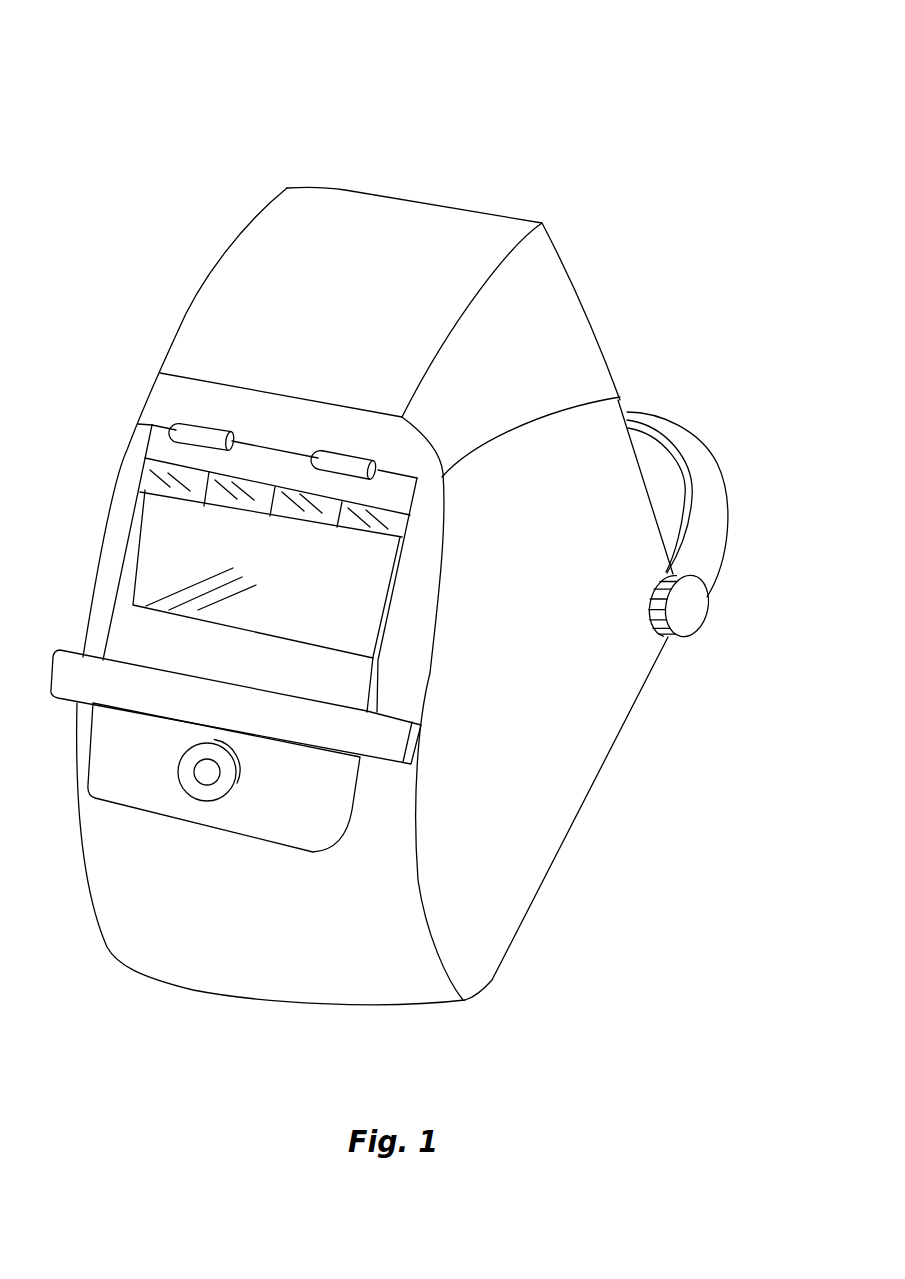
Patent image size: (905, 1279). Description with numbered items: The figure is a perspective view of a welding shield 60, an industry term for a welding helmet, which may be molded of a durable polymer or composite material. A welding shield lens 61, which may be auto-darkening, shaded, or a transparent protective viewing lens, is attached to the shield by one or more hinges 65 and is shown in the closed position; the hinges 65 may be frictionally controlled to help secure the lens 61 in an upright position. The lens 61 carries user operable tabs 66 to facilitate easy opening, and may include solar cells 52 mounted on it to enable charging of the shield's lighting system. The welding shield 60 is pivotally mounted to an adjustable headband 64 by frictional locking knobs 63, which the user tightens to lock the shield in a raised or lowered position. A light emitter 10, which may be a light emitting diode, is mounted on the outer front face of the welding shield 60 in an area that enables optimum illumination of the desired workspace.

The welding shield 60 is at (272, 110).
The welding shield lens 61 is at (160, 542).
The solar cells 52 is at (160, 505).
The hinges 65 is at (350, 450).
The adjustable headband 64 is at (688, 430).
The frictional locking knobs 63 is at (647, 607).
The user operable tabs 66 is at (422, 744).
The light emitter 10 is at (237, 773).